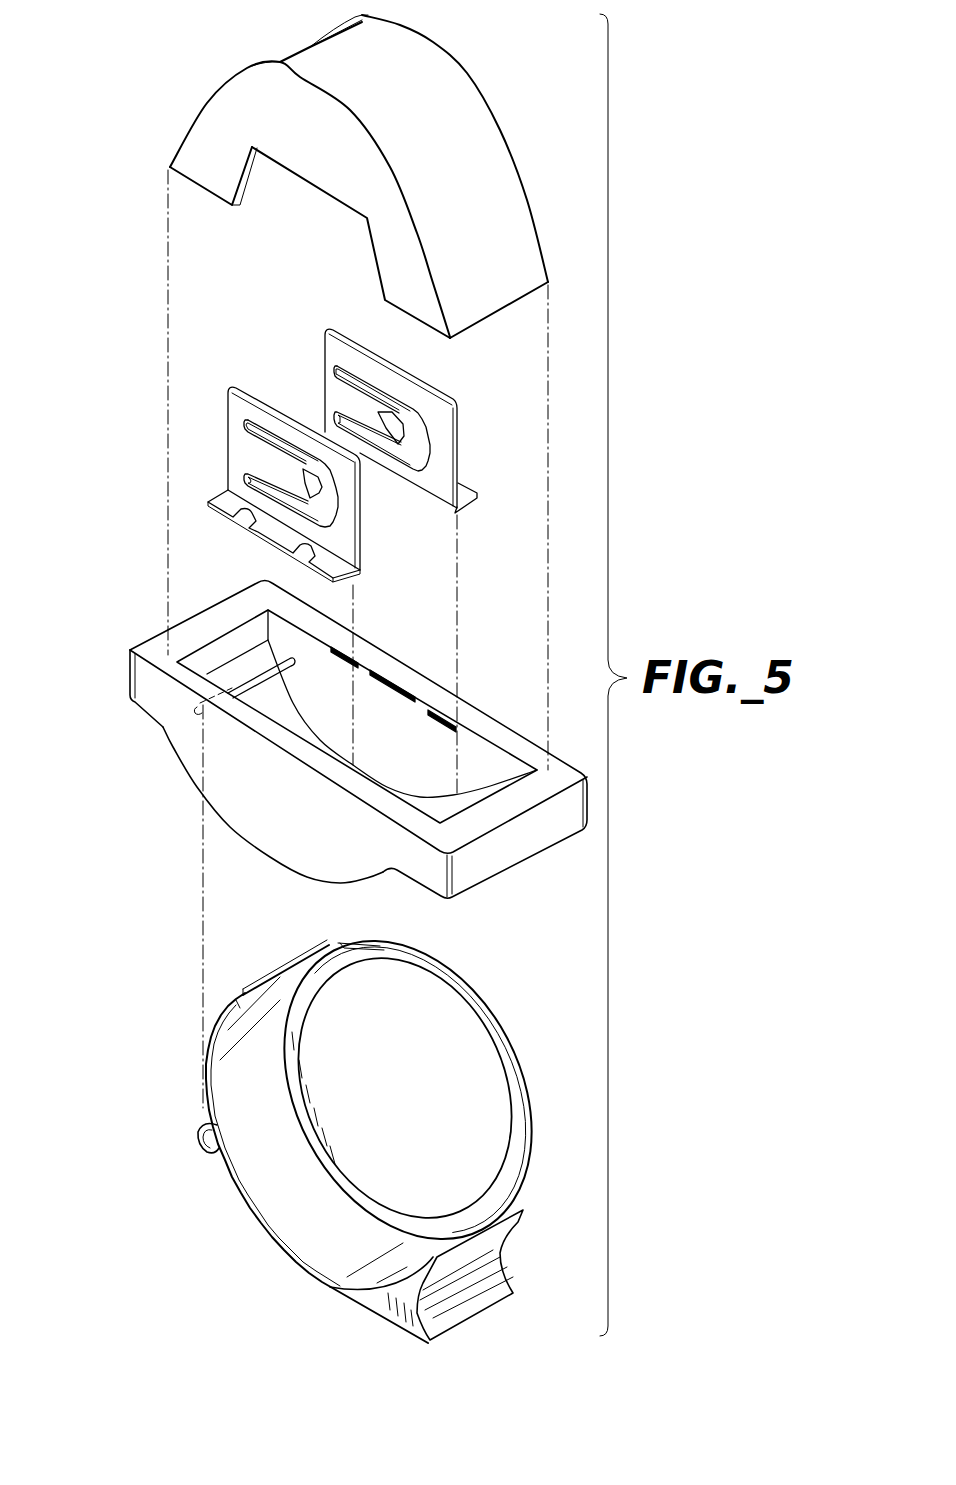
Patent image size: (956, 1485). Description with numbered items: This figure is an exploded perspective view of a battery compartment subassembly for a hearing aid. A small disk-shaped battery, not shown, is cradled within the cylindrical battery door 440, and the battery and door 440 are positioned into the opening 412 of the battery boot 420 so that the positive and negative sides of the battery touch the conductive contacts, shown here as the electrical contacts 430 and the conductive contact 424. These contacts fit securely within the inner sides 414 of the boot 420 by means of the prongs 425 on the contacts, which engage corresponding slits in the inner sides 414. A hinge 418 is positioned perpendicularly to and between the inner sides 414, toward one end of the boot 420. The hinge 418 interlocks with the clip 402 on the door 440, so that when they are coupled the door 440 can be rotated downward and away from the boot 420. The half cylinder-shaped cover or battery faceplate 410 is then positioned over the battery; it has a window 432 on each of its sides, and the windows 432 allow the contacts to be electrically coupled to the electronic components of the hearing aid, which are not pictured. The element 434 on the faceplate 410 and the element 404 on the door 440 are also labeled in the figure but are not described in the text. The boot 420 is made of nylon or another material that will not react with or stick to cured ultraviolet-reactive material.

The battery boot 420 is at (337, 176).
The cover leg 434 is at (227, 130).
The window 432 is at (320, 198).
The positive and negative electrical contacts 430 is at (235, 484).
The prongs 425 is at (268, 536).
The conductive contact 424 is at (430, 488).
The hinge 418 is at (268, 673).
The opening 412 is at (453, 807).
The inner sides 414 is at (417, 750).
The battery faceplate 410 is at (355, 735).
The battery door 440 is at (298, 1168).
The clip 402 is at (353, 1120).
The mounting foot 404 is at (480, 1298).